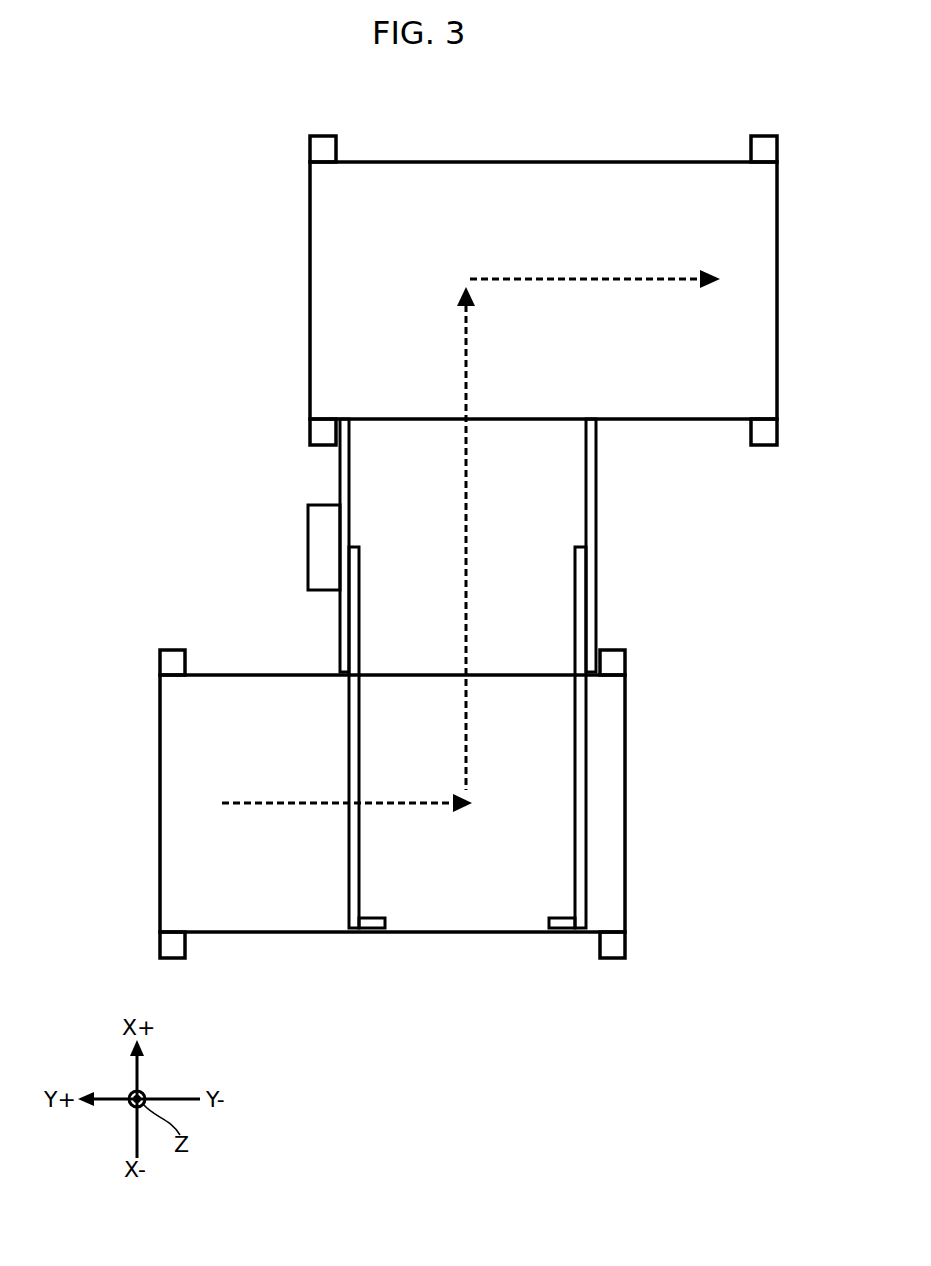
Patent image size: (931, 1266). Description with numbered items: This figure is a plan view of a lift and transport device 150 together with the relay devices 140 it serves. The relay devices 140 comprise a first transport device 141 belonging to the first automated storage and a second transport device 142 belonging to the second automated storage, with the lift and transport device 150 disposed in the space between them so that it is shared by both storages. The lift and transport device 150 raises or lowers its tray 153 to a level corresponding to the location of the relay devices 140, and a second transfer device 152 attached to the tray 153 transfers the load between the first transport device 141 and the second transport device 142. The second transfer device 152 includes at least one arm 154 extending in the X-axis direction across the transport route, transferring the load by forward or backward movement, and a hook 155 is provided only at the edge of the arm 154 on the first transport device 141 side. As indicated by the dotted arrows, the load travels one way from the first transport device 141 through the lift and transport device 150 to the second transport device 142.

The relay devices 140 is at (468, 551).
The first transport device 141 is at (238, 935).
The second transport device 142 is at (585, 160).
The lift and transport device 150 is at (339, 478).
The second transfer device 152 is at (354, 640).
The tray 153 is at (515, 513).
The arm 154 is at (591, 790).
The hook 155 is at (552, 933).